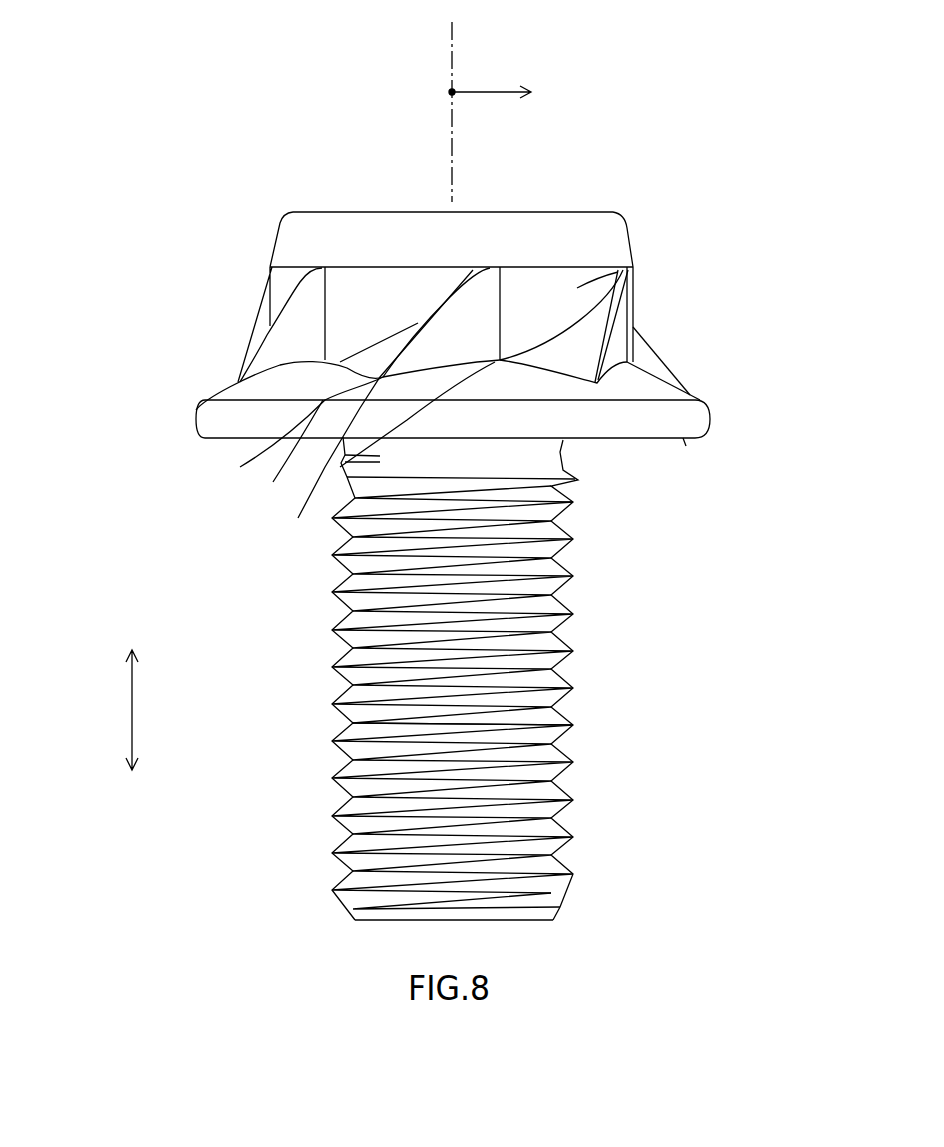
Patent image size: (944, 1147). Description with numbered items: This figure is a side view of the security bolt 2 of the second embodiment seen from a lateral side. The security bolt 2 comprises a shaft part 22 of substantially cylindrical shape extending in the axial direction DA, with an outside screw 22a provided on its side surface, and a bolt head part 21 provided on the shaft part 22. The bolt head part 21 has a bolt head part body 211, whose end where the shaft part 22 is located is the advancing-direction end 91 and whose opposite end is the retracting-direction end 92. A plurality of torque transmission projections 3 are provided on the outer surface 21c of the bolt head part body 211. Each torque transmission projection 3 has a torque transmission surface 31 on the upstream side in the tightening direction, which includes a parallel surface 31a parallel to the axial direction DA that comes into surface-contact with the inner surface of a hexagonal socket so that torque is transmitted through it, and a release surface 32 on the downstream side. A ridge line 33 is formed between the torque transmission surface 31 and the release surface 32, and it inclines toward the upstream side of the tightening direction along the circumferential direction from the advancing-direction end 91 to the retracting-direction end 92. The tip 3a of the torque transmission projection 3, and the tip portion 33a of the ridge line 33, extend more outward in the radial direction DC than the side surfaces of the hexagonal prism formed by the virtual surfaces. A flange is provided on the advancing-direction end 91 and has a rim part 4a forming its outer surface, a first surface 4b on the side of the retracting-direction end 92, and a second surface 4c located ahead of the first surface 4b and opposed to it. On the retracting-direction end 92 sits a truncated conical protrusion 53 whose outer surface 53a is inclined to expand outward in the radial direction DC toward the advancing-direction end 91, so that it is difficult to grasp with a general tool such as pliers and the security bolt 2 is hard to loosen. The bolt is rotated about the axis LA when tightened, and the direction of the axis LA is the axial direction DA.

The security bolt 2 is at (766, 182).
The torque transmission projection 3 is at (636, 327).
The tip of the torque transmission projection 3a is at (349, 374).
The rim part 4a is at (710, 413).
The first surface 4b is at (680, 384).
The second surface 4c is at (686, 446).
The bolt head part 21 is at (620, 268).
The bolt head part body 211 is at (683, 289).
The outer surface of the bolt head part body 21c is at (337, 304).
The shaft part 22 is at (578, 666).
The outside screw 22a is at (550, 718).
The torque transmission surface 31 is at (620, 330).
The parallel surface 31a is at (643, 400).
The release surface 32 is at (582, 356).
The ridge line 33 is at (418, 325).
The tip portion of the ridge line 33a is at (283, 457).
The truncated conical protrusion 53 is at (587, 224).
The outer surface of the truncated conical protrusion 53a is at (628, 240).
The advancing-direction end 91 is at (391, 408).
The retracting-direction end 92 is at (549, 267).
The axis LA is at (455, 32).
The radial direction DC is at (490, 79).
The axial direction DA is at (111, 710).